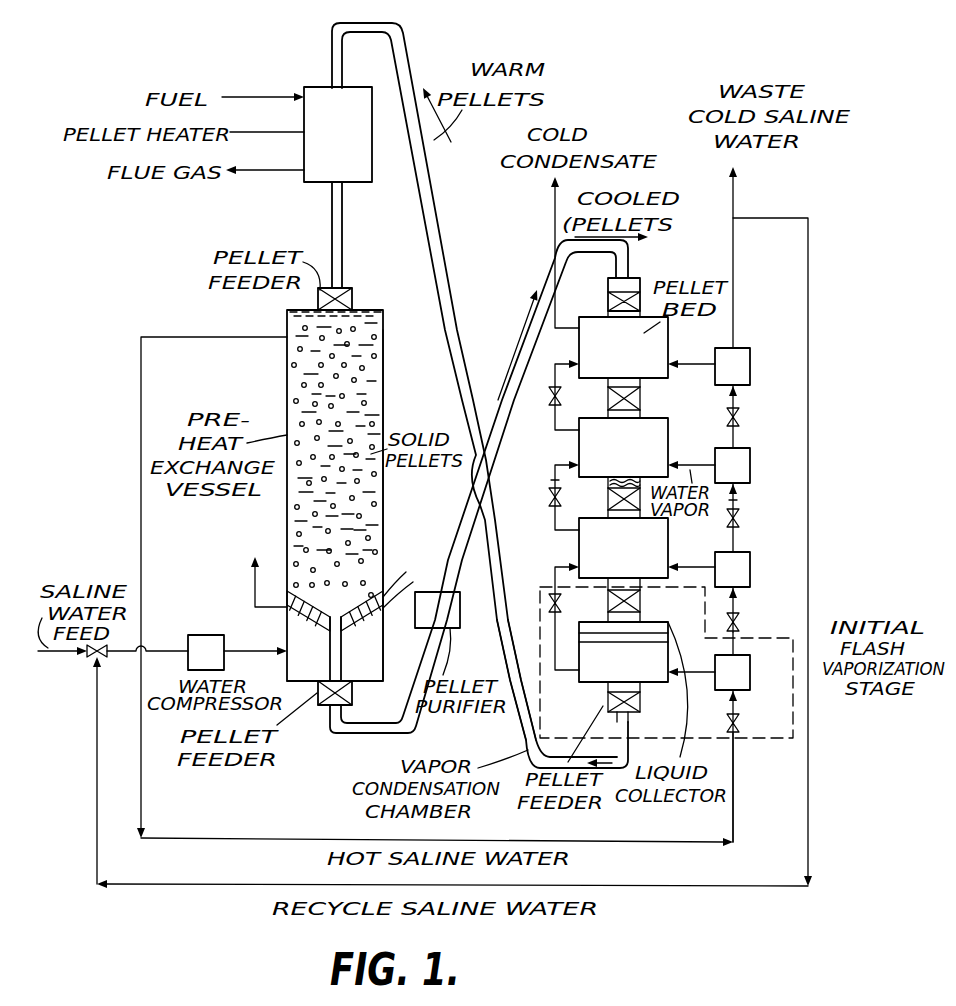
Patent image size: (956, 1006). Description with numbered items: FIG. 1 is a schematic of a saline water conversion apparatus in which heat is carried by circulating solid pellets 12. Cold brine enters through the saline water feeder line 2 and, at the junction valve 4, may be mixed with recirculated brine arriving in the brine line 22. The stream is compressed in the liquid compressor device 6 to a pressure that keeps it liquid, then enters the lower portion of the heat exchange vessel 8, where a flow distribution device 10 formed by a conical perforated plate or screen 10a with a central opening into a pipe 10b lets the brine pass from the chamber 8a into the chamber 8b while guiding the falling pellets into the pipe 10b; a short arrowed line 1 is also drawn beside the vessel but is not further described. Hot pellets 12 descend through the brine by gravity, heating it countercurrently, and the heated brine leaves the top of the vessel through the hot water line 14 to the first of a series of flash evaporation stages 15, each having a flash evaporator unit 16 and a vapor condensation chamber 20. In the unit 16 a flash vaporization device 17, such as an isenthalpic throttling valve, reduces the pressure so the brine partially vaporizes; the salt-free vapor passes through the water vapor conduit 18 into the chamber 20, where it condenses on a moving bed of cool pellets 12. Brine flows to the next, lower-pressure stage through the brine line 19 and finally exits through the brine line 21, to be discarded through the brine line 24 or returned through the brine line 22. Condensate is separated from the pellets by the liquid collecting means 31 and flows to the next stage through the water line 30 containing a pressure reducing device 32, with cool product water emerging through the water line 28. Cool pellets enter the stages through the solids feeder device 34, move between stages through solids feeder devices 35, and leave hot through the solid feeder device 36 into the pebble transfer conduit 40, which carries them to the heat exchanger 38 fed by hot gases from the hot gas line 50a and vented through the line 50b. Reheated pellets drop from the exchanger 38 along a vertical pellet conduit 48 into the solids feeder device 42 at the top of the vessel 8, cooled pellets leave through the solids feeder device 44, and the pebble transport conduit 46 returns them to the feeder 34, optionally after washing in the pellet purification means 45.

The preheated water outlet line 1 is at (252, 585).
The saline water feeder line 2 is at (72, 658).
The junction valve 4 is at (102, 660).
The liquid compressor device 6 is at (207, 608).
The heat exchange vessel 8 is at (392, 493).
The chamber 8a is at (382, 640).
The chamber 8b is at (372, 525).
The flow distribution device 10 is at (390, 588).
The conical perforated plate or screen 10a is at (415, 583).
The pipe 10b is at (330, 648).
The solid pellets 12 is at (374, 413).
The hot water line 14 is at (162, 333).
The flash evaporation stage 15 is at (793, 647).
The flash evaporator unit 16 is at (750, 682).
The flash vaporization device 17 is at (739, 621).
The water vapor conduit 18 is at (692, 662).
The brine line 19 is at (740, 647).
The vapor condensation chamber 20 is at (590, 682).
The brine line 21 is at (735, 348).
The brine line 22 is at (802, 218).
The brine line 24 is at (735, 203).
The water line 28 is at (552, 213).
The water line 30 is at (553, 420).
The liquid collecting means 31 is at (645, 637).
The pressure reducing device 32 is at (546, 603).
The solids feeder device 34 is at (638, 280).
The solids feeder device 35 is at (608, 601).
The solid feeder device 36 is at (640, 703).
The heat exchanger 38 is at (372, 172).
The pebble transfer conduit 40 is at (523, 720).
The solids feeder device 42 is at (352, 288).
The solids feeder device 44 is at (322, 708).
The pellet purification means 45 is at (461, 622).
The pebble transport conduit 46 is at (384, 733).
The pellet conduit 48 is at (332, 203).
The hot gas line 50a is at (265, 97).
The line 50b is at (272, 170).